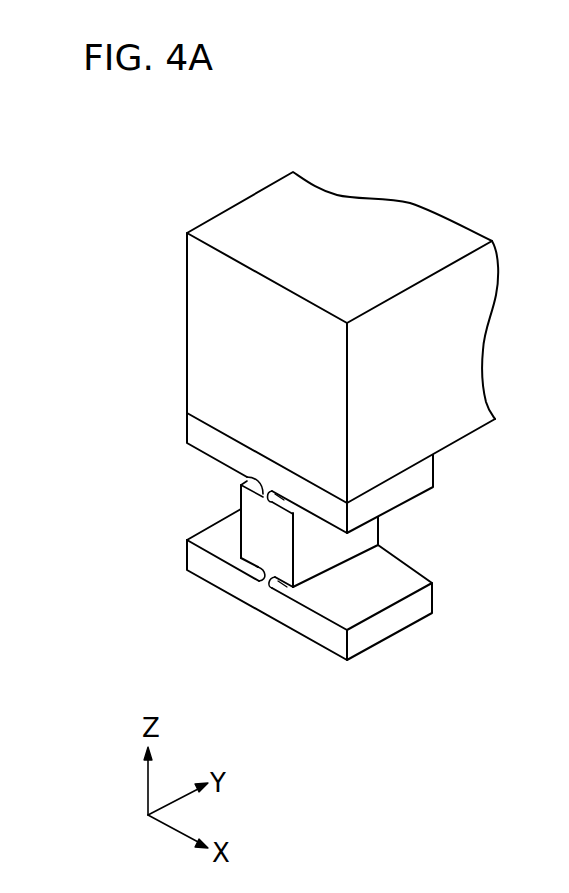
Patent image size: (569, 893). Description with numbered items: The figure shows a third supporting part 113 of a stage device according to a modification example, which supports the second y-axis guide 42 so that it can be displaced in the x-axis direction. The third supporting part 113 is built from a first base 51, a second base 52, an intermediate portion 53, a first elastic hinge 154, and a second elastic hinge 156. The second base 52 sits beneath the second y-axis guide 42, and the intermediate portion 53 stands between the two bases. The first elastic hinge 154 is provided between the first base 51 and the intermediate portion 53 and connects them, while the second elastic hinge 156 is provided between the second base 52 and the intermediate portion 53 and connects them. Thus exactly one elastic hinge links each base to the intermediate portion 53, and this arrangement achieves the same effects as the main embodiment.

The second y-axis guide 42 is at (258, 205).
The third supporting part 113 is at (163, 433).
The second base 52 is at (423, 477).
The intermediate portion 53 is at (370, 533).
The first base 51 is at (420, 605).
The first elastic hinge 154 is at (268, 580).
The second elastic hinge 156 is at (263, 492).